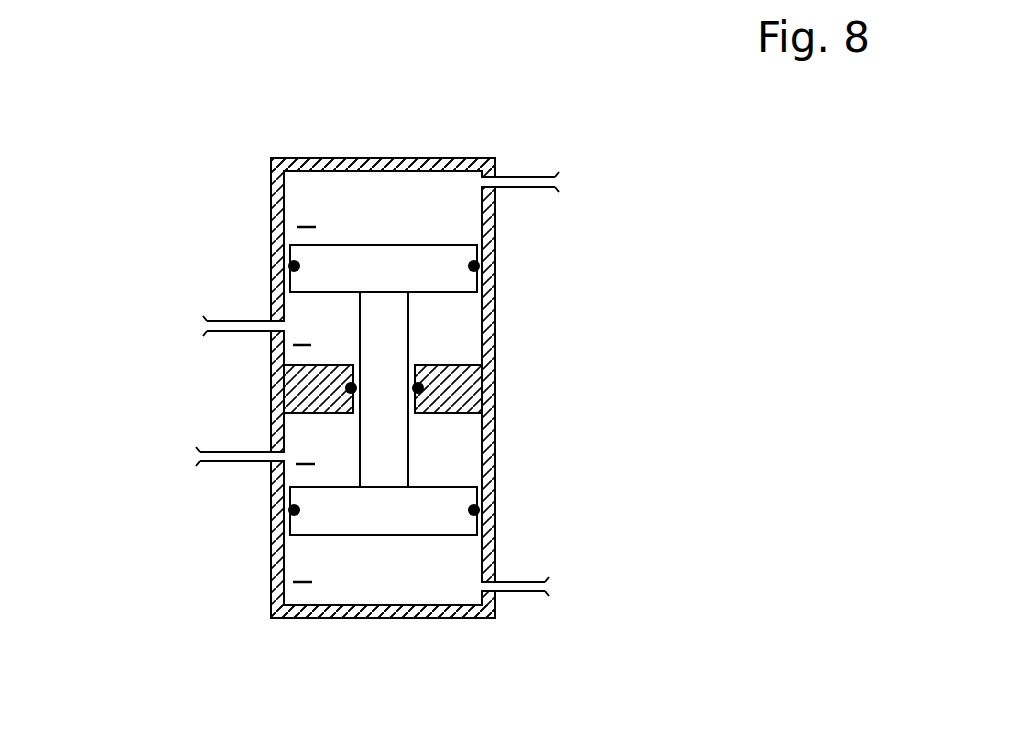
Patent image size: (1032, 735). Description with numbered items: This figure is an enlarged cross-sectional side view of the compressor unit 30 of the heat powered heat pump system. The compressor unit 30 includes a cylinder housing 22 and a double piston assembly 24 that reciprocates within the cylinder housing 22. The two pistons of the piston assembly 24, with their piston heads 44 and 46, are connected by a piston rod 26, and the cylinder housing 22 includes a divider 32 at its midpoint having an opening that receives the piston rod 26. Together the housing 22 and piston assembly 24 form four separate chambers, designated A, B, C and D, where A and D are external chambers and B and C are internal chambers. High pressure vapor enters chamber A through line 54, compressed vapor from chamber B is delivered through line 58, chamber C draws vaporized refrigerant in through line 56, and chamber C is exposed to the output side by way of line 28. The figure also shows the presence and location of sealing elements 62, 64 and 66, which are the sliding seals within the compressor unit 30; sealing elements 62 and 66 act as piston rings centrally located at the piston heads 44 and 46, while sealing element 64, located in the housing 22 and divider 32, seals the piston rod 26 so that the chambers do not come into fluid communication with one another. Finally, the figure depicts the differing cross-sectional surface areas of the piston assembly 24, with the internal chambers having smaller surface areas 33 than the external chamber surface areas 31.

The compressor unit 30 is at (389, 358).
The cylinder housing 22 is at (298, 158).
The double piston assembly 24 is at (357, 572).
The piston rod 26 is at (373, 446).
The line 28 is at (513, 593).
The external chamber surface areas 31 is at (398, 158).
The divider 32 is at (288, 377).
The internal chamber surface areas 33 is at (440, 292).
The piston head 44 is at (344, 262).
The piston head 46 is at (322, 501).
The line 54 is at (516, 176).
The line 56 is at (253, 450).
The line 58 is at (253, 319).
The sealing element 62 is at (478, 265).
The sealing element 64 is at (425, 386).
The sealing element 66 is at (480, 503).